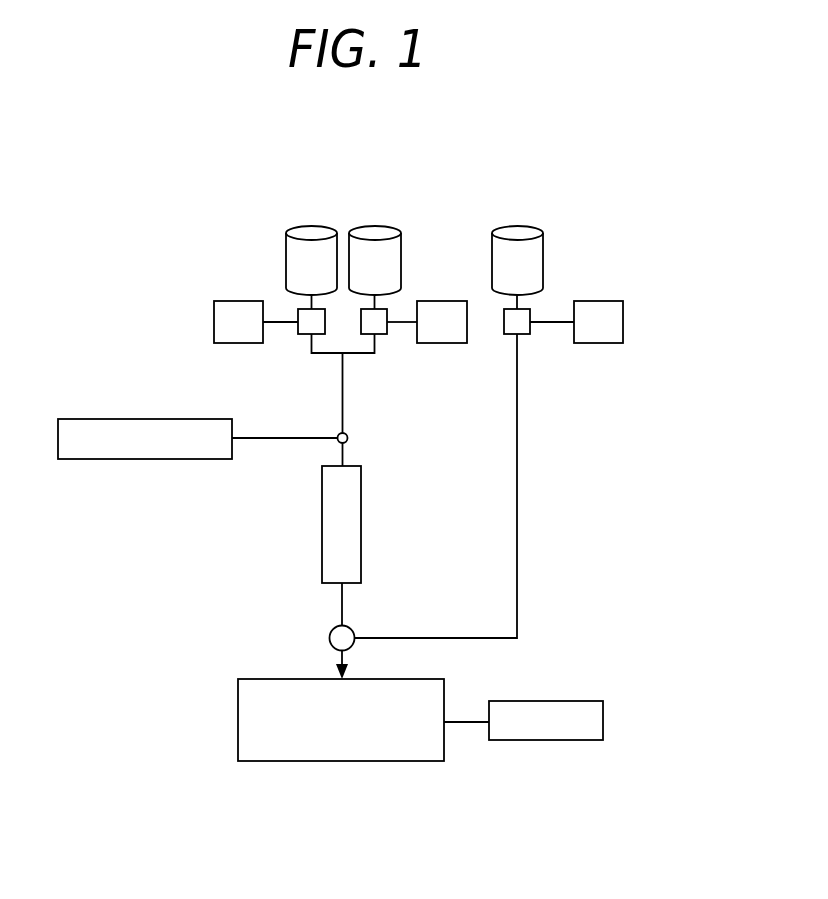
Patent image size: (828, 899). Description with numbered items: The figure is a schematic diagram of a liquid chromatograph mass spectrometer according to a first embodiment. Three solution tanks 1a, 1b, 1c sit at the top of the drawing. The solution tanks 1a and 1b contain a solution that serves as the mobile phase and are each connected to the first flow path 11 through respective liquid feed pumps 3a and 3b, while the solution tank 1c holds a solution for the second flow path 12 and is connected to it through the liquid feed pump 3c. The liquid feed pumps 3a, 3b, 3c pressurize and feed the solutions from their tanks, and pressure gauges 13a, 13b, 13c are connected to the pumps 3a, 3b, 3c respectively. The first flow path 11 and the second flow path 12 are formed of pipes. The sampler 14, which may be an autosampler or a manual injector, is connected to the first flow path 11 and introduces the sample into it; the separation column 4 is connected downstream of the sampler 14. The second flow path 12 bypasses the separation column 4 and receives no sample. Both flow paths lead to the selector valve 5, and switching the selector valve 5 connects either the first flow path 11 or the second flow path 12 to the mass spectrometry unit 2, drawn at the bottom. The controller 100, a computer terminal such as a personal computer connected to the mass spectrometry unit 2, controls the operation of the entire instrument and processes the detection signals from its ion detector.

The solution tank 1a is at (318, 223).
The solution tank 1b is at (381, 223).
The solution tank 1c is at (530, 223).
The liquid feed pump 3a is at (305, 336).
The liquid feed pump 3b is at (382, 336).
The liquid feed pump 3c is at (522, 336).
The pressure gauge 13a is at (235, 300).
The pressure gauge 13b is at (435, 300).
The pressure gauge 13c is at (610, 300).
The first flow path 11 is at (343, 405).
The second flow path 12 is at (517, 545).
The sampler 14 is at (127, 419).
The separation column 4 is at (322, 520).
The selector valve 5 is at (330, 638).
The mass spectrometry unit 2 is at (238, 721).
The controller 100 is at (605, 722).